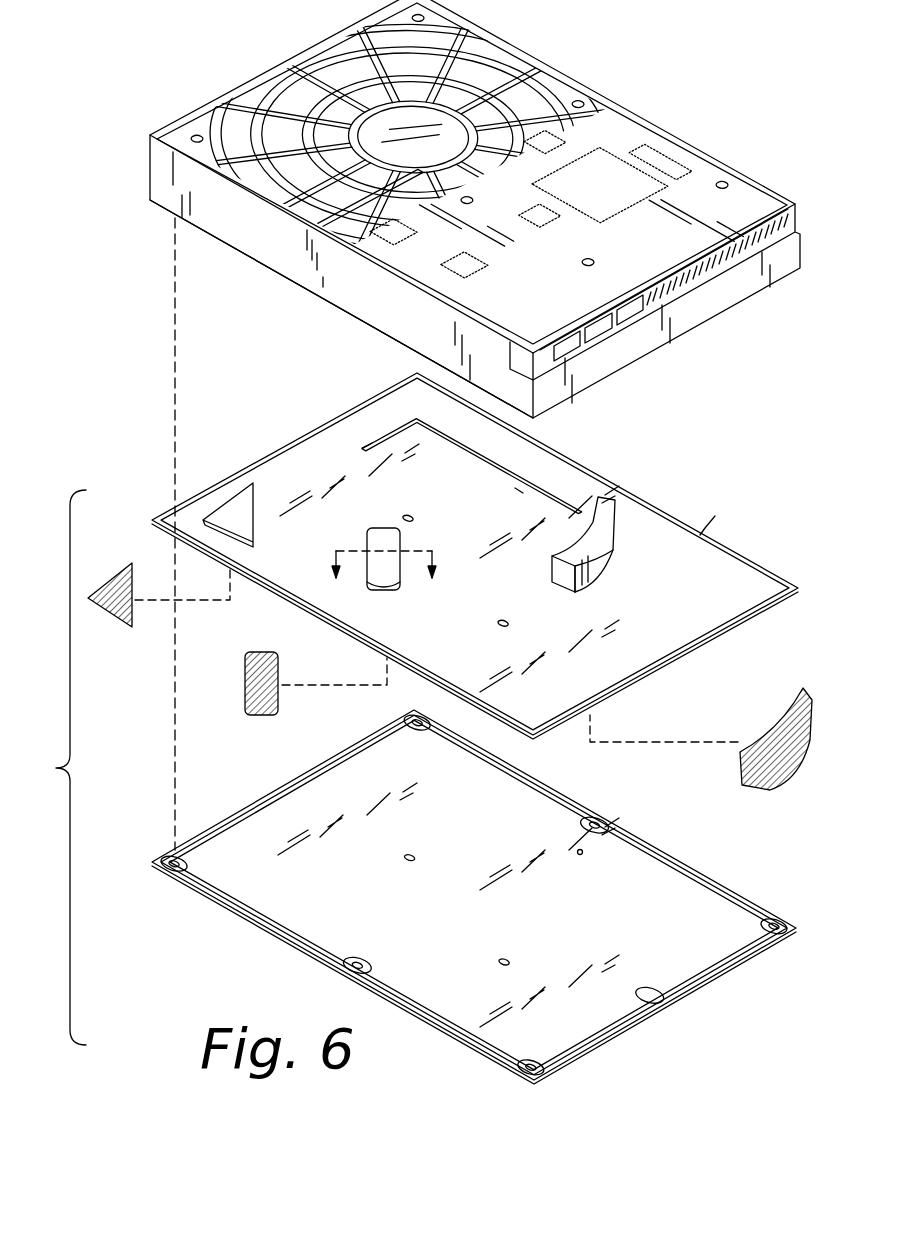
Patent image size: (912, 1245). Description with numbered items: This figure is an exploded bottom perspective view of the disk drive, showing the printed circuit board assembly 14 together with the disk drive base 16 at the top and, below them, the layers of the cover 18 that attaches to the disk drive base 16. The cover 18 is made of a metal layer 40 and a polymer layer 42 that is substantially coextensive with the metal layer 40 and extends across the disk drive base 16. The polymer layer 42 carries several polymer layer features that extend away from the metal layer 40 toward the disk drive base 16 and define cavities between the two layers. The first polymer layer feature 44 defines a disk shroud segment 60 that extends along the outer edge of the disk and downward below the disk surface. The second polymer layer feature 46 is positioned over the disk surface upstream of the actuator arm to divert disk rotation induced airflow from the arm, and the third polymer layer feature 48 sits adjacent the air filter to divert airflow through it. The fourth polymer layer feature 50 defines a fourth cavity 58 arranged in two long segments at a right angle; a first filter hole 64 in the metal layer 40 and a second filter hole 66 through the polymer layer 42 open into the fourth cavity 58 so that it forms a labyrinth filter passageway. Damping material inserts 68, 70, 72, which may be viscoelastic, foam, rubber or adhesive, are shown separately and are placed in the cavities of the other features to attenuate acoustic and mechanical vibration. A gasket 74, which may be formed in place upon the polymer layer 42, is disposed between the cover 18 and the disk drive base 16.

The printed circuit board assembly 14 is at (710, 163).
The disk drive base 16 is at (278, 262).
The cover 18 is at (98, 631).
The metal layer 40 is at (474, 897).
The polymer layer 42 is at (475, 556).
The first polymer layer feature 44 is at (605, 541).
The second polymer layer feature 46 is at (386, 528).
The third polymer layer feature 48 is at (252, 500).
The fourth polymer layer feature 50 is at (470, 450).
The fourth cavity 58 is at (520, 489).
The disk shroud segment 60 is at (598, 575).
The first filter hole 64 is at (588, 857).
The second filter hole 66 is at (352, 446).
The damping material insert 68 is at (805, 700).
The damping material insert 70 is at (272, 652).
The damping material insert 72 is at (134, 578).
The gasket 74 is at (702, 535).